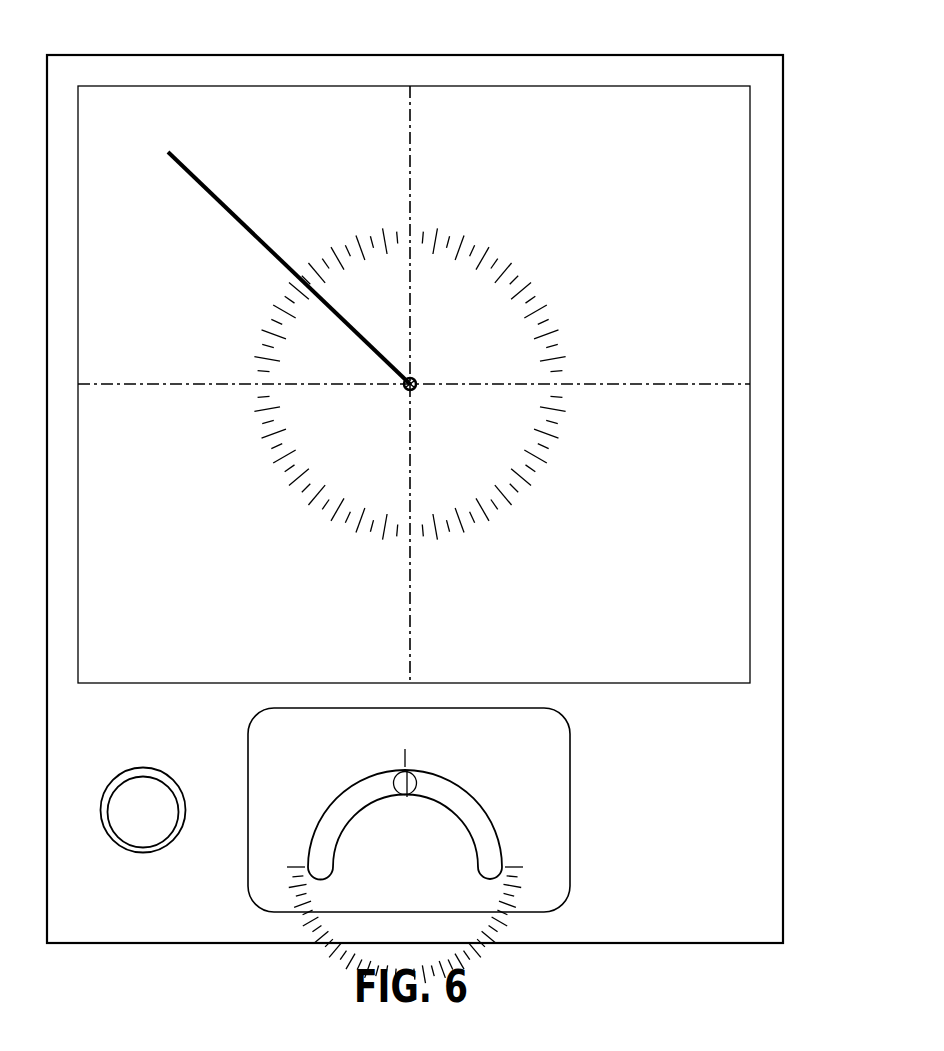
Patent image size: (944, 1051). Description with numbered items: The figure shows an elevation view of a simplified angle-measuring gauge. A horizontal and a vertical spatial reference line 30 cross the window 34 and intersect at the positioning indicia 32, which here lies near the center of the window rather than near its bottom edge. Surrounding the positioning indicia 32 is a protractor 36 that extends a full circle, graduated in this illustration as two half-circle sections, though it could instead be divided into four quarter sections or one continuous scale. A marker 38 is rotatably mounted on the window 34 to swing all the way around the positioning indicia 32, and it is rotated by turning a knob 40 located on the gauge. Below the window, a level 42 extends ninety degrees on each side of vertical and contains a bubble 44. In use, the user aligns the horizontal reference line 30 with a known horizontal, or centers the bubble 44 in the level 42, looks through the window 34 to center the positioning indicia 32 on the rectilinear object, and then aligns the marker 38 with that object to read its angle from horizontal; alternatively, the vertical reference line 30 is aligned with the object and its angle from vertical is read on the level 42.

The spatial reference lines 30 is at (412, 147).
The positioning indicia 32 is at (410, 384).
The window 34 is at (670, 188).
The protractor 36 is at (586, 420).
The marker 38 is at (197, 170).
The knob 40 is at (142, 820).
The level 42 is at (483, 857).
The bubble 44 is at (406, 797).